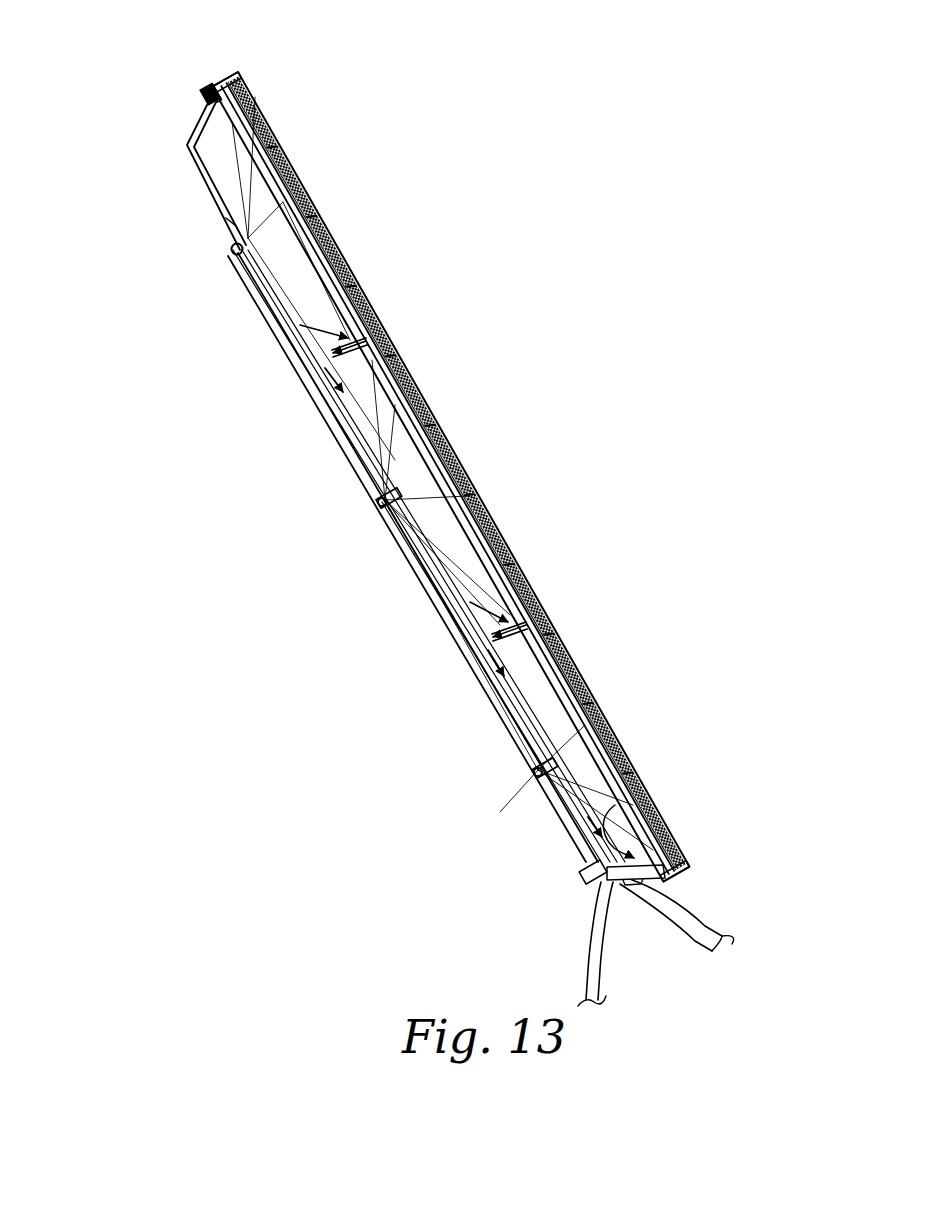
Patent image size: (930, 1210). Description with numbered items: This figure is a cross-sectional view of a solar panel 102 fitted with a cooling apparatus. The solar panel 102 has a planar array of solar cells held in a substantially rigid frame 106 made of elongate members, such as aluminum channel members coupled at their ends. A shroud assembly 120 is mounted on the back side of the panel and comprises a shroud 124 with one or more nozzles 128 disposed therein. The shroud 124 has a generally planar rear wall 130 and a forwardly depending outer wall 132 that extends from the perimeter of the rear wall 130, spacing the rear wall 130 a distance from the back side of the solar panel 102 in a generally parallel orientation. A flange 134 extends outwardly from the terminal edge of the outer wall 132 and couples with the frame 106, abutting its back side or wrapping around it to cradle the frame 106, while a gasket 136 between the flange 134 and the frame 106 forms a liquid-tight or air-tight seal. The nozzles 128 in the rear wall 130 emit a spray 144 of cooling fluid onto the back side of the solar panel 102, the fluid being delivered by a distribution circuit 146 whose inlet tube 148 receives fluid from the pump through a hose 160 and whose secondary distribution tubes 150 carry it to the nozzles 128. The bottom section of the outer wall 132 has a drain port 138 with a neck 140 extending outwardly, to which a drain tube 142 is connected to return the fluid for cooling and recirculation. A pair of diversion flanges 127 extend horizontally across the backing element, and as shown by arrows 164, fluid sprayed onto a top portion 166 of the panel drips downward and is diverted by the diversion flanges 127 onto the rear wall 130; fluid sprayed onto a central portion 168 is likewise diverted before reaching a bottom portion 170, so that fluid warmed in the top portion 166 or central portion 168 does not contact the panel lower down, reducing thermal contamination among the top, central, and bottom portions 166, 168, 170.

The solar panel 102 is at (255, 95).
The frame 106 is at (230, 78).
The shroud assembly 120 is at (224, 224).
The shroud 124 is at (232, 248).
The diversion flanges 127 is at (368, 350).
The nozzles 128 is at (384, 512).
The rear wall 130 is at (456, 626).
The outer wall 132 is at (190, 143).
The flange 134 is at (206, 100).
The gasket 136 is at (212, 88).
The drain port 138 is at (585, 870).
The neck 140 is at (612, 885).
The drain tube 142 is at (698, 915).
The spray 144 is at (290, 330).
The distribution circuit 146 is at (488, 692).
The inlet tube 148 is at (404, 592).
The secondary distribution tubes 150 is at (377, 500).
The hose 160 is at (600, 985).
The arrows 164 is at (322, 382).
The top portion 166 is at (120, 316).
The central portion 168 is at (300, 576).
The bottom portion 170 is at (430, 856).